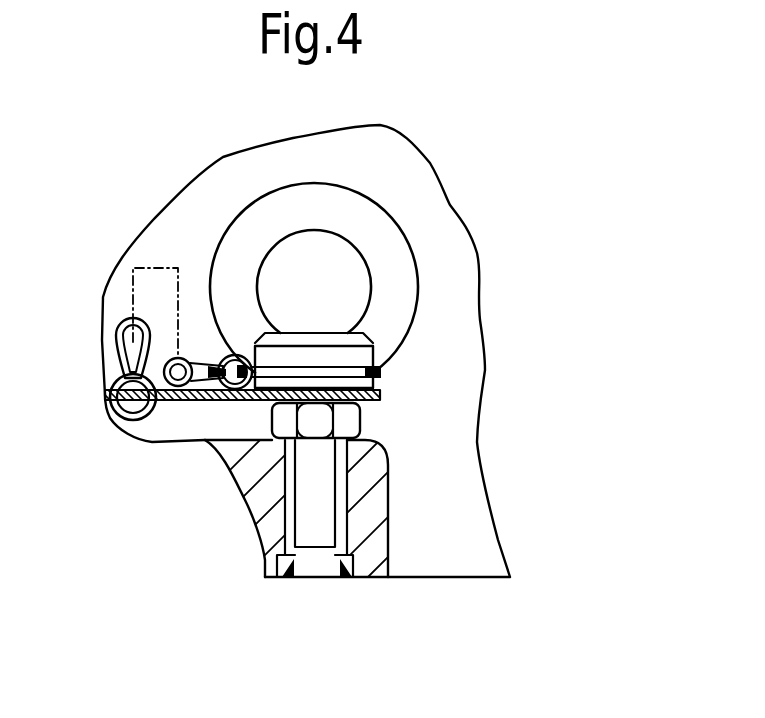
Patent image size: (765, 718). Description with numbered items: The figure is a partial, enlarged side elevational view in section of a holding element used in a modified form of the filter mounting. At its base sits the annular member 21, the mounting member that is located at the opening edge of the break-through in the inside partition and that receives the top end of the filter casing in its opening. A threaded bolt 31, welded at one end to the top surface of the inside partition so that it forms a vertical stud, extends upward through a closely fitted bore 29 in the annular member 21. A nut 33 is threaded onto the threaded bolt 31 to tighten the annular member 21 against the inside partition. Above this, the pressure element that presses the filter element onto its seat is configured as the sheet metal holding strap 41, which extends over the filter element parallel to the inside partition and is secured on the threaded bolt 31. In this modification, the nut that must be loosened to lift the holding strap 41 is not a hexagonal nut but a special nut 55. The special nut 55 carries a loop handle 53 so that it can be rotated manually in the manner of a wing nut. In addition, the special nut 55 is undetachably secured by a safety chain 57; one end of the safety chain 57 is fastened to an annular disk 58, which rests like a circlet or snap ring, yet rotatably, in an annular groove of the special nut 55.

The annular member 21 is at (375, 550).
The bore 29 is at (292, 512).
The threaded bolt 31 is at (310, 480).
The nut 33 is at (350, 423).
The holding strap 41 is at (187, 400).
The loop handle 53 is at (400, 298).
The special nut 55 is at (365, 352).
The safety chain 57 is at (191, 360).
The annular disk 58 is at (381, 372).